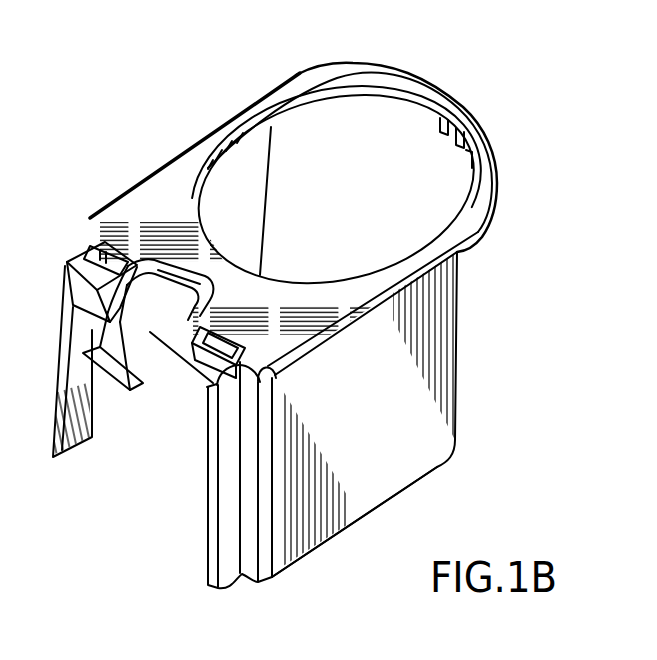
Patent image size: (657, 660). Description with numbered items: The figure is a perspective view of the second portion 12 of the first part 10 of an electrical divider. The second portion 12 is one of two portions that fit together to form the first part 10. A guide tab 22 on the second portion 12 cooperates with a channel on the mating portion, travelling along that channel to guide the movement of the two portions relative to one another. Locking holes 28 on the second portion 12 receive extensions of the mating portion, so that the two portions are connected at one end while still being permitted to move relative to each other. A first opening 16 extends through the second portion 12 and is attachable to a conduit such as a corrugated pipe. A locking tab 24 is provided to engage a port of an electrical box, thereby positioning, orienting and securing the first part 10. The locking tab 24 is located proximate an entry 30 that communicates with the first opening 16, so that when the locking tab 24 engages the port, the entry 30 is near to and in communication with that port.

The first part 10 is at (463, 500).
The second portion 12 is at (474, 455).
The first opening 16 is at (372, 142).
The guide tab 22 is at (500, 148).
The locking tab 24 is at (134, 386).
The locking holes 28 is at (222, 335).
The entry 30 is at (195, 541).